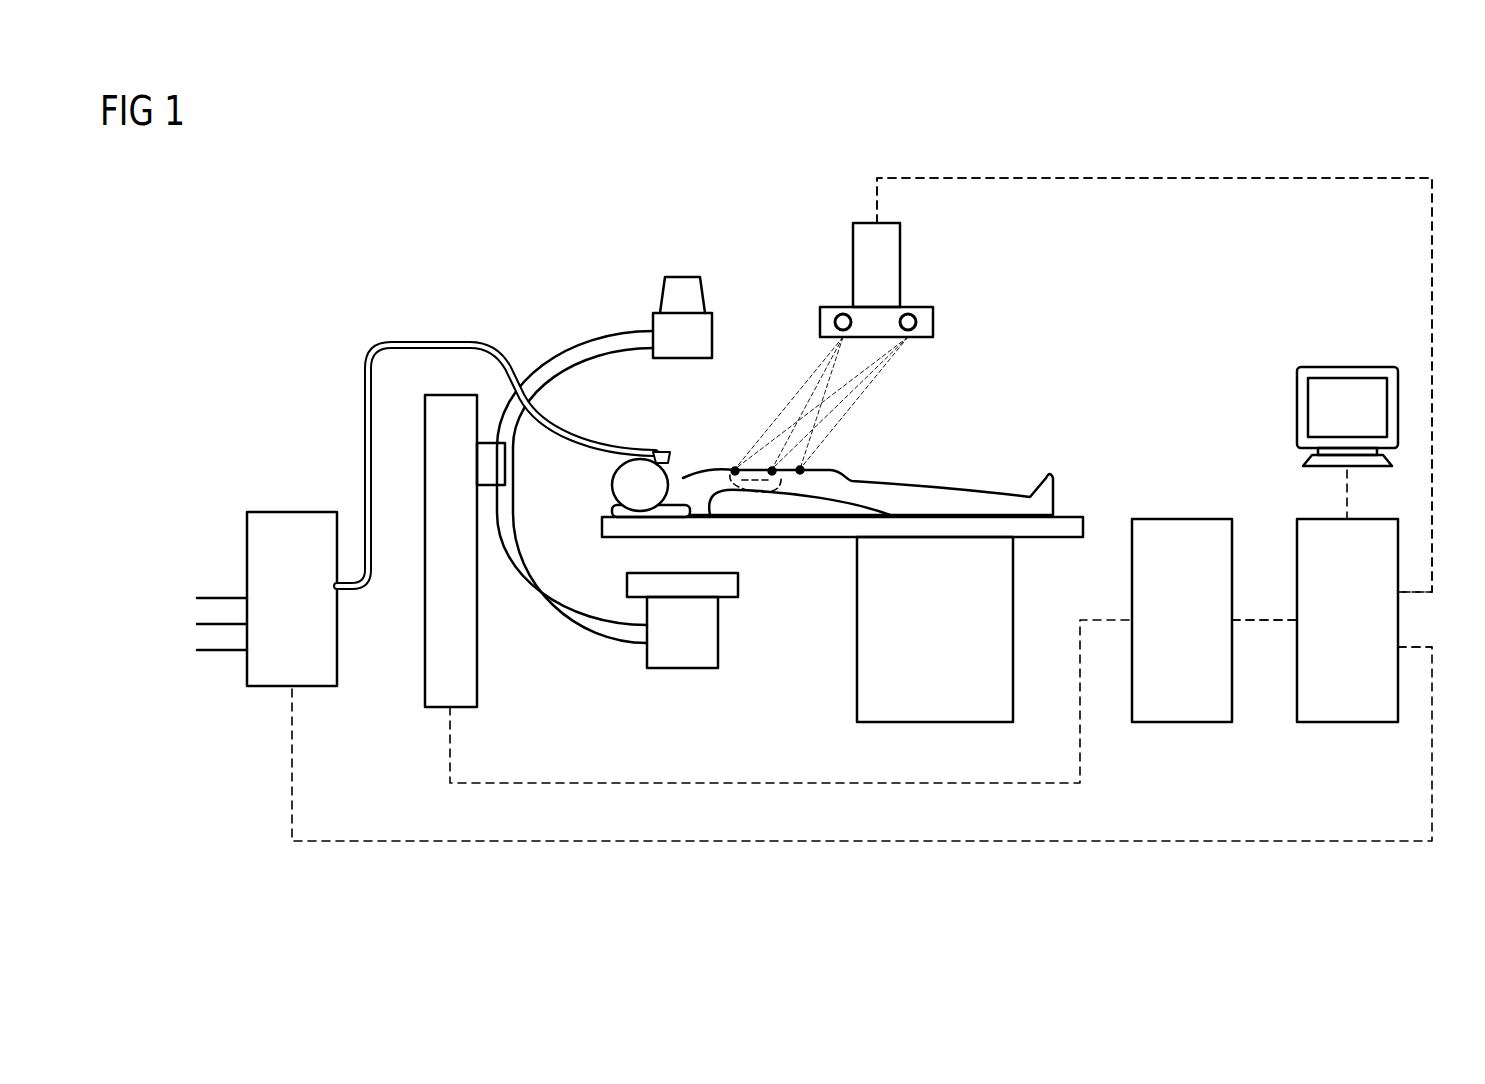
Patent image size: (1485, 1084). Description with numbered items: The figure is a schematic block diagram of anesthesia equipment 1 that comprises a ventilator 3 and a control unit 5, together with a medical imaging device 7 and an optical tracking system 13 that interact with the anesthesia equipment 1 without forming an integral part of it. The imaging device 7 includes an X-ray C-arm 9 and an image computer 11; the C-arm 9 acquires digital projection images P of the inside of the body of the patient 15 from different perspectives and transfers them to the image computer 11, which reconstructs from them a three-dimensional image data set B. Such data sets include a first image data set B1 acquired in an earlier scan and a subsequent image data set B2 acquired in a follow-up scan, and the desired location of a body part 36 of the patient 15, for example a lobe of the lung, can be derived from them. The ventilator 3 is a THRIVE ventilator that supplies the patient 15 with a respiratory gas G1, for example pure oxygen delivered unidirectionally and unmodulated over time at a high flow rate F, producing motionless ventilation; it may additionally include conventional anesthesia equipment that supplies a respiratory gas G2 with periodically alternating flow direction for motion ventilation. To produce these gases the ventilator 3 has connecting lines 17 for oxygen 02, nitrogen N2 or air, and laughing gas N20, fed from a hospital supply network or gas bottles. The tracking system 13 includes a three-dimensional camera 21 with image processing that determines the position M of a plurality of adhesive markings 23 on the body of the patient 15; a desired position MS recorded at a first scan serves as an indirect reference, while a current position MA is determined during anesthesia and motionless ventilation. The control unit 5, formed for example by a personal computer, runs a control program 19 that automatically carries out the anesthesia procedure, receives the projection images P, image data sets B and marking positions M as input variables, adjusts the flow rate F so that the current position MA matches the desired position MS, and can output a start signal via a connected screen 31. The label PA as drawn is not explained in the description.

The anesthesia equipment 1 is at (822, 617).
The ventilator 3 is at (292, 512).
The control unit 5 is at (1347, 722).
The medical imaging device 7 is at (828, 531).
The C-arm 9 is at (590, 333).
The image computer 11 is at (1180, 722).
The optical tracking system 13 is at (861, 346).
The patient 15 is at (945, 483).
The connecting lines 17 is at (184, 633).
The control program 19 is at (1398, 622).
The camera 21 is at (833, 322).
The markings 23 is at (772, 469).
The screen 31 is at (1350, 367).
The body part 36 is at (757, 495).
The respiratory gas G1 is at (496, 425).
The respiratory gas G2 is at (440, 342).
The position M is at (1154, 347).
The current position MA is at (1154, 347).
The desired position MS is at (1163, 178).
The image data set B is at (1248, 543).
The first image data set B1 is at (1248, 543).
The subsequent image data set B2 is at (1277, 618).
The projection images P is at (873, 701).
The patient parameter PA is at (777, 783).
The laughing gas N20 is at (222, 596).
The nitrogen N2 is at (220, 624).
The oxygen 02 is at (215, 652).
The flow rate F is at (833, 845).